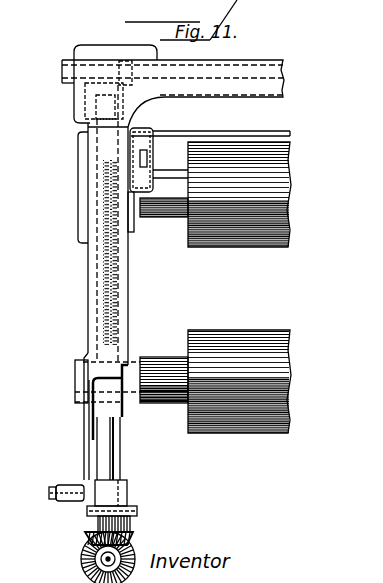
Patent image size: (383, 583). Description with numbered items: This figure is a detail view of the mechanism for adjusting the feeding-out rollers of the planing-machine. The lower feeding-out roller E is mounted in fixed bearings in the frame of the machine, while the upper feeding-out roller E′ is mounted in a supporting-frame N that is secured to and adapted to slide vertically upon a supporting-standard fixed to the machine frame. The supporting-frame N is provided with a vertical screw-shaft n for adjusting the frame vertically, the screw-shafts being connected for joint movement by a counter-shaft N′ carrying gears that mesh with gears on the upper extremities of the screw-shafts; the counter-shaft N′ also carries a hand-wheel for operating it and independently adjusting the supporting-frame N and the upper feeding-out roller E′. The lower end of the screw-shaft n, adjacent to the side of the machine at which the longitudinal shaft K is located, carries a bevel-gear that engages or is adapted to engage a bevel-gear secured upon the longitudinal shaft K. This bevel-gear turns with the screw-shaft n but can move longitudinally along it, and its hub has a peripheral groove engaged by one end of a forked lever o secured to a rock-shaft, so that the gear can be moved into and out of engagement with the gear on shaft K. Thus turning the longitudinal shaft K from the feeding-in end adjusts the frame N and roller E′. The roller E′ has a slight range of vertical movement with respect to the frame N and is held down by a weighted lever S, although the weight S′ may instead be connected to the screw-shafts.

The gear n′ is at (125, 60).
The counter-shaft N′ is at (190, 72).
The weighted lever S is at (140, 156).
The supporting-frame N is at (90, 176).
The weight S′ is at (133, 185).
The screw-shaft n is at (117, 273).
The upper feeding-out roller E′ is at (230, 247).
The lower feeding-out roller E is at (215, 368).
The forked lever o is at (68, 484).
The longitudinal shaft K is at (86, 541).